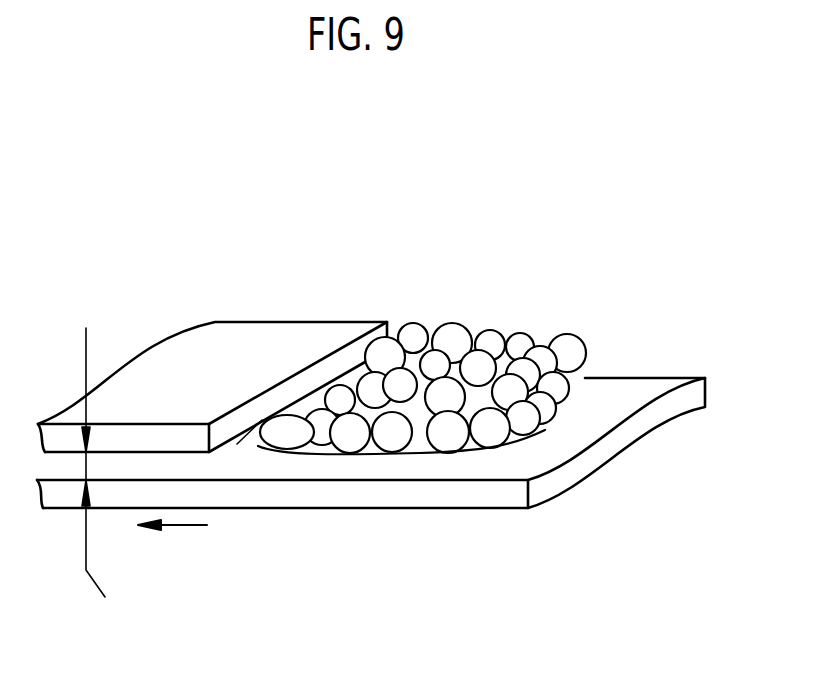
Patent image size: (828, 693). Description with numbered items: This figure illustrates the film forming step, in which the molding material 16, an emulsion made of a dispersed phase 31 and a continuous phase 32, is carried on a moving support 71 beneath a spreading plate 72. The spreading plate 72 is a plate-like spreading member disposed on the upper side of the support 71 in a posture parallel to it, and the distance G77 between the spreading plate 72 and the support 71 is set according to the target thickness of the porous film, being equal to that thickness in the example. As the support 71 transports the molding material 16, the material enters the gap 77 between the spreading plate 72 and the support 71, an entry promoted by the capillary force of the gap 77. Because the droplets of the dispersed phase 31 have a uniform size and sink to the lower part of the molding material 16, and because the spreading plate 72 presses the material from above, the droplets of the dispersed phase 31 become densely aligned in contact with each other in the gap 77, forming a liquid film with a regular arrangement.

The molding material 16 is at (436, 406).
The dispersed phase 31 is at (447, 440).
The continuous phase 32 is at (325, 450).
The support 71 is at (507, 498).
The spreading plate 72 is at (312, 337).
The gap 77 is at (271, 412).
The distance G77 is at (116, 481).